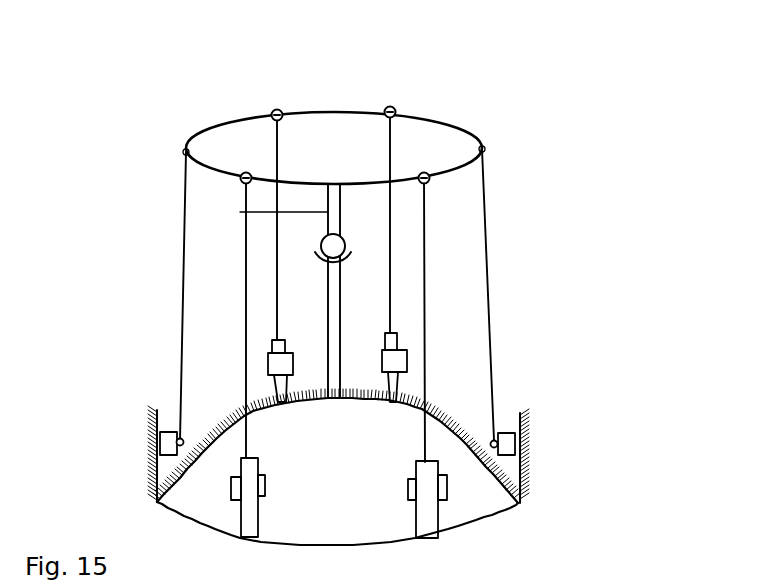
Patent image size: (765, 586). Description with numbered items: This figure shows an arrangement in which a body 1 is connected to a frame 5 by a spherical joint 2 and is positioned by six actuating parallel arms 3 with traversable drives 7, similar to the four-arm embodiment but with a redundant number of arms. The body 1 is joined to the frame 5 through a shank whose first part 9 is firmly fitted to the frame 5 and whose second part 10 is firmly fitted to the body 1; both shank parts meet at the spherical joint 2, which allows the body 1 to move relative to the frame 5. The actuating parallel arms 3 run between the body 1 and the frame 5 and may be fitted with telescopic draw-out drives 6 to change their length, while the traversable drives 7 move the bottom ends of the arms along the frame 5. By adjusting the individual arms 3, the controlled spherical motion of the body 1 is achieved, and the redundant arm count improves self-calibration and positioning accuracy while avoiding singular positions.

The body 1 is at (333, 125).
The spherical joint 2 is at (345, 246).
The actuating parallel arms 3 is at (282, 157).
The frame 5 is at (473, 522).
The telescopic drives 6 is at (337, 367).
The traversable drives 7 is at (180, 432).
The first part of the shank 9 is at (363, 302).
The second part of the shank 10 is at (240, 212).